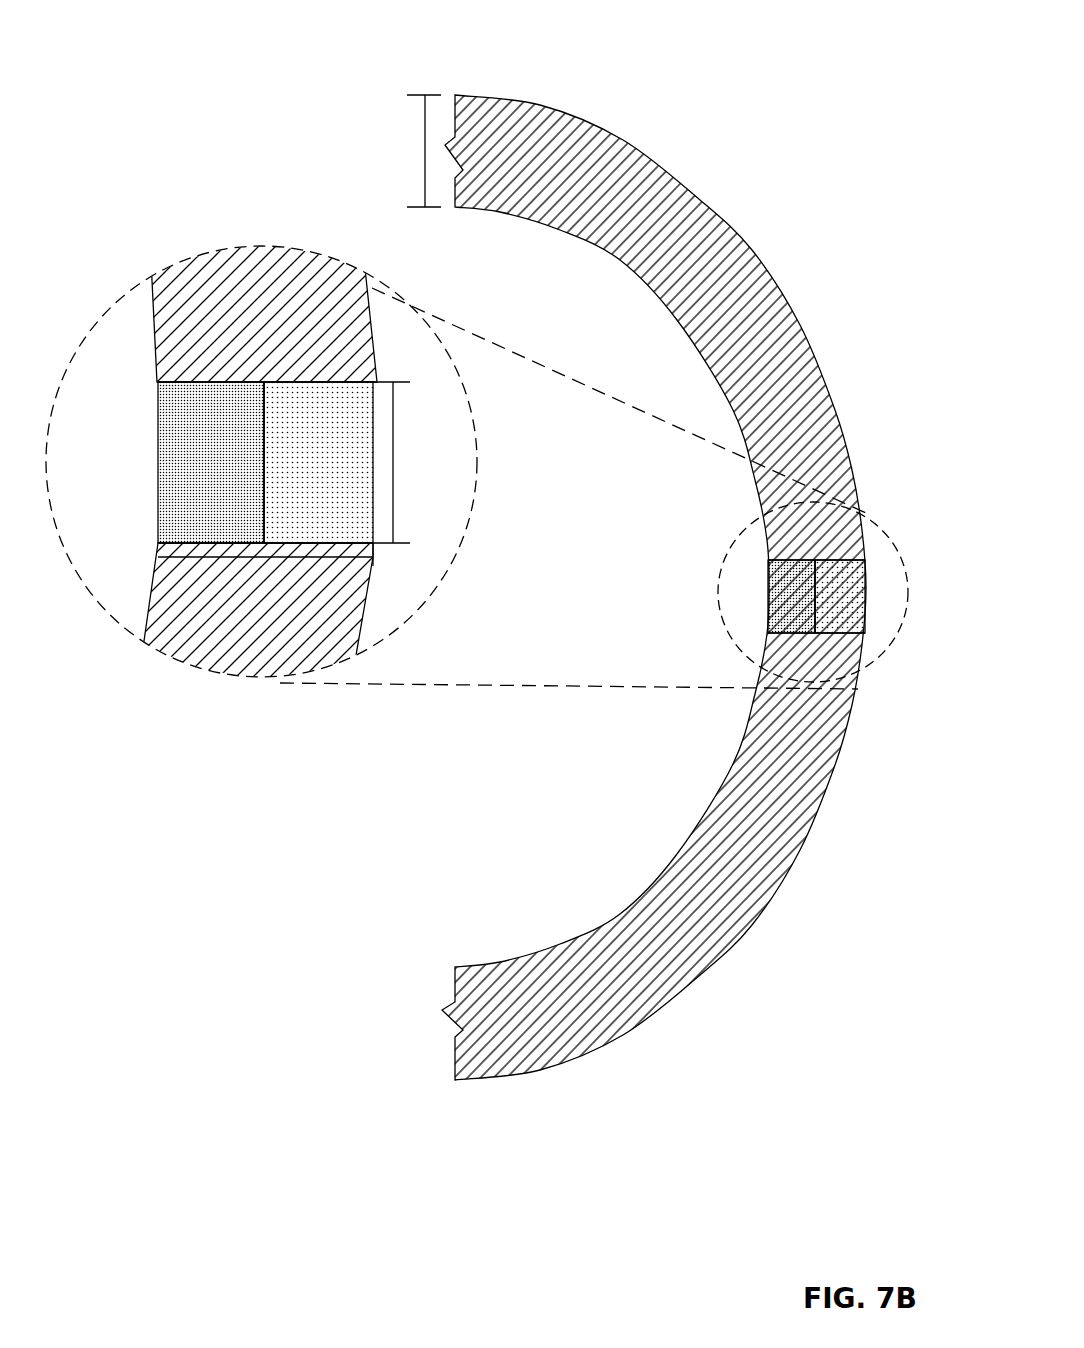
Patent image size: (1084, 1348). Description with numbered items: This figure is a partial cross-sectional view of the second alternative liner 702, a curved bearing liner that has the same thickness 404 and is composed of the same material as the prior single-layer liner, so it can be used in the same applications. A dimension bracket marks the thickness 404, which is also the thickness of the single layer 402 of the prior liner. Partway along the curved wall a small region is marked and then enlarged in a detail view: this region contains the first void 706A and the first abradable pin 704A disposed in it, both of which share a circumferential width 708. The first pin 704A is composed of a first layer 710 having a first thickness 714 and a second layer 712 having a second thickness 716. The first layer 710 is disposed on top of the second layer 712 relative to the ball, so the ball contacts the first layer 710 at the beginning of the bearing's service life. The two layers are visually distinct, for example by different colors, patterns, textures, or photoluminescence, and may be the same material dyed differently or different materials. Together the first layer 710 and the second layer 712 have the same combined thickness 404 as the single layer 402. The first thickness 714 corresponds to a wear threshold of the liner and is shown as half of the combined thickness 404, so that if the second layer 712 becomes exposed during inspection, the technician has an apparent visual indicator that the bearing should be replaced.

The second alternative liner 702 is at (504, 540).
The single layer 402 is at (588, 120).
The thickness 404 is at (424, 150).
The first abradable pin 704A is at (862, 496).
The first void 706A is at (261, 439).
The circumferential width 708 is at (394, 440).
The first layer 710 is at (175, 380).
The second layer 712 is at (281, 378).
The first thickness 714 is at (161, 556).
The second thickness 716 is at (366, 558).